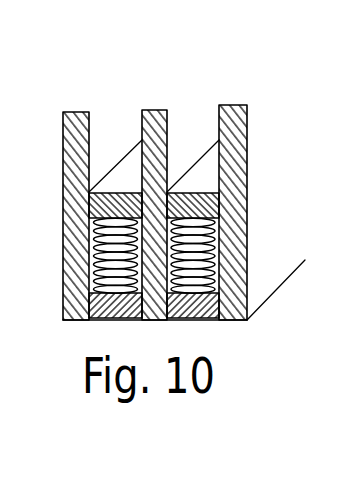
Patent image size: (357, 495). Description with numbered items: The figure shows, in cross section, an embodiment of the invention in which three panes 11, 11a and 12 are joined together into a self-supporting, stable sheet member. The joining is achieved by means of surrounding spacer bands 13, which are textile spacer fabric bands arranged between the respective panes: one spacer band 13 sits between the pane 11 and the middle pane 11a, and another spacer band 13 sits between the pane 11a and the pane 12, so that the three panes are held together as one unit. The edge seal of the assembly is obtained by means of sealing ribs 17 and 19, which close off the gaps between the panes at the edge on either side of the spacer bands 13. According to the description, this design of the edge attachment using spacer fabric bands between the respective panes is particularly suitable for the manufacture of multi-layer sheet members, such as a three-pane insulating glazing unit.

The pane 11 is at (80, 111).
The pane 11a is at (162, 110).
The pane 12 is at (237, 105).
The spacer band 13 is at (97, 226).
The sealing rib 17 is at (195, 320).
The sealing rib 19 is at (205, 207).